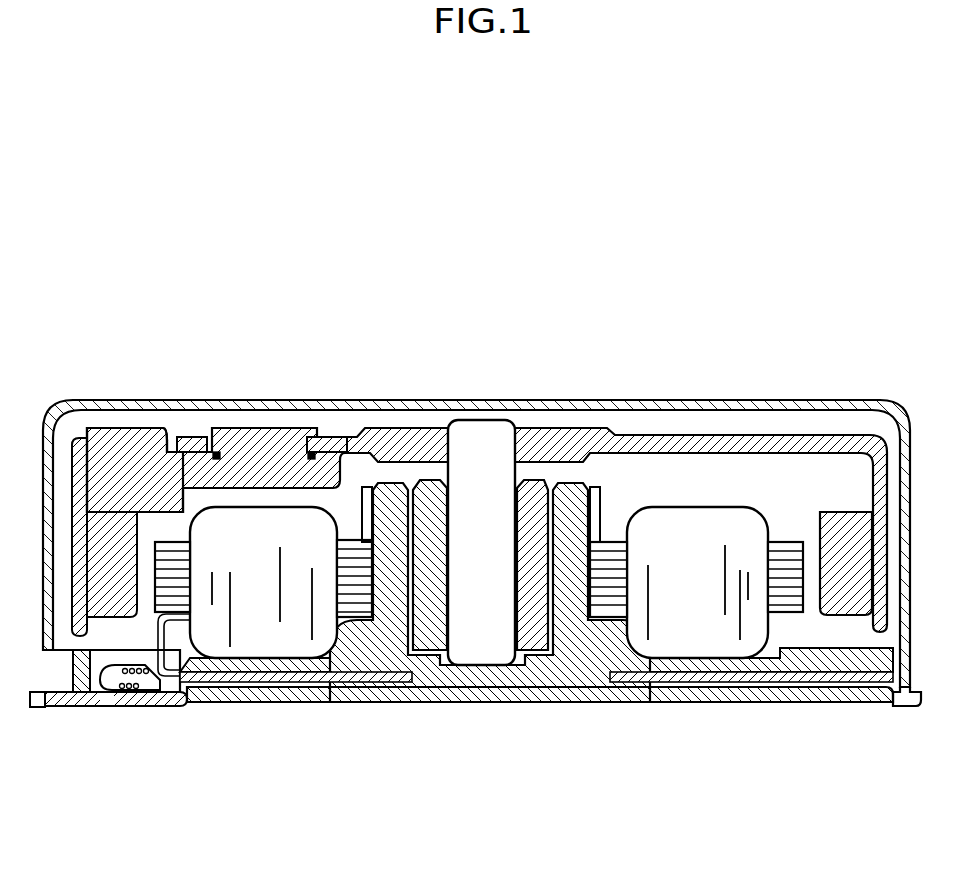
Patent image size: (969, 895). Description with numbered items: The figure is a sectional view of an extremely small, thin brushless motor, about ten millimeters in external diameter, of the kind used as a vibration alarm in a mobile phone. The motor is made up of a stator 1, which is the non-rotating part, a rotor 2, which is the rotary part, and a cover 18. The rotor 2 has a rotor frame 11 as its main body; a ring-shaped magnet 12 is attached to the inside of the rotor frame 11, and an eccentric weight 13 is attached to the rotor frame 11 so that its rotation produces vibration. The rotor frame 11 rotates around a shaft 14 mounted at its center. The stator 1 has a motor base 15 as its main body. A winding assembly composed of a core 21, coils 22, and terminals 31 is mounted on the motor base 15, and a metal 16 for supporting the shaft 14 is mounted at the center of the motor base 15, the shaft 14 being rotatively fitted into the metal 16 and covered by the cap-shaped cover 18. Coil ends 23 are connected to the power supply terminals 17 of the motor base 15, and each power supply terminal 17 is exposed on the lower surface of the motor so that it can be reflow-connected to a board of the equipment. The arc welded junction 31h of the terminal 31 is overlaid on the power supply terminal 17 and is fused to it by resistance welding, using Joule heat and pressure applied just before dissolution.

The stator 1 is at (290, 705).
The rotor 2 is at (672, 432).
The rotor frame 11 is at (568, 436).
The ring-shaped magnet 12 is at (842, 523).
The eccentric weight 13 is at (133, 445).
The shaft 14 is at (482, 440).
The motor base 15 is at (562, 682).
The metal 16 is at (430, 637).
The power supply terminal 17 is at (62, 707).
The cover 18 is at (250, 437).
The core 21 is at (610, 603).
The coils 22 is at (702, 638).
The coil ends 23 is at (150, 695).
The terminal 31 is at (173, 707).
The arc welded junction 31h is at (103, 707).